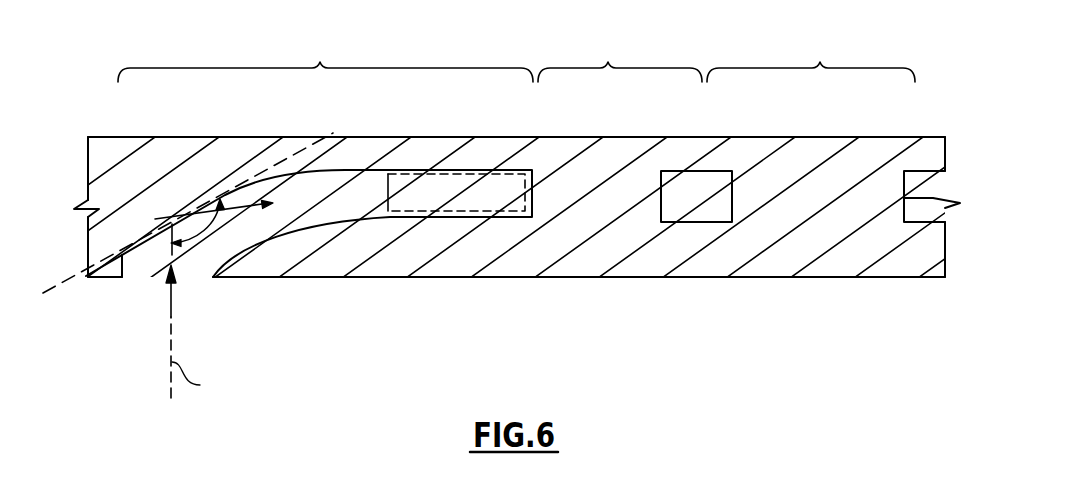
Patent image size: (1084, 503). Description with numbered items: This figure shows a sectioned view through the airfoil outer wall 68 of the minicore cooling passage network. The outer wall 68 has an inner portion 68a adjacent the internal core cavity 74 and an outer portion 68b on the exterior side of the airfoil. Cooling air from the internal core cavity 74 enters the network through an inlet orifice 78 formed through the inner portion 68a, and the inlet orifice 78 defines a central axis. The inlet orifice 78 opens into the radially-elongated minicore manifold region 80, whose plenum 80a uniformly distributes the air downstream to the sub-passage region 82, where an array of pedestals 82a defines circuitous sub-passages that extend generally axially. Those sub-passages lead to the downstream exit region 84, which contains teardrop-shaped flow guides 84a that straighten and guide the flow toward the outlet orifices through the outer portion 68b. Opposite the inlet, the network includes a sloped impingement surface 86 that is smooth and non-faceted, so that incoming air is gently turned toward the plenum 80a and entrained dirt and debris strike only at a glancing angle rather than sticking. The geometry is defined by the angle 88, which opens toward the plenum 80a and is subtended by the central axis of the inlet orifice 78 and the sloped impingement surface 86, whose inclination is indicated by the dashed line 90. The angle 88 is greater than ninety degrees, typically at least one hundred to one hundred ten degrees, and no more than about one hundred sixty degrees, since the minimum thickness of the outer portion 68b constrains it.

The airfoil outer wall 68 is at (833, 263).
The inner portion of the airfoil outer wall 68a is at (330, 279).
The outer portion of the airfoil outer wall 68b is at (391, 137).
The internal core cavity 74 is at (277, 338).
The inlet orifice 78 is at (122, 268).
The minicore manifold region 80 is at (320, 63).
The plenum 80a is at (388, 191).
The sub-passage region 82 is at (608, 63).
The pedestals 82a is at (540, 193).
The exit region 84 is at (820, 63).
The flow guides 84a is at (743, 197).
The sloped impingement surface 86 is at (140, 237).
The angle 88 is at (205, 233).
The dashed line 90 is at (270, 165).